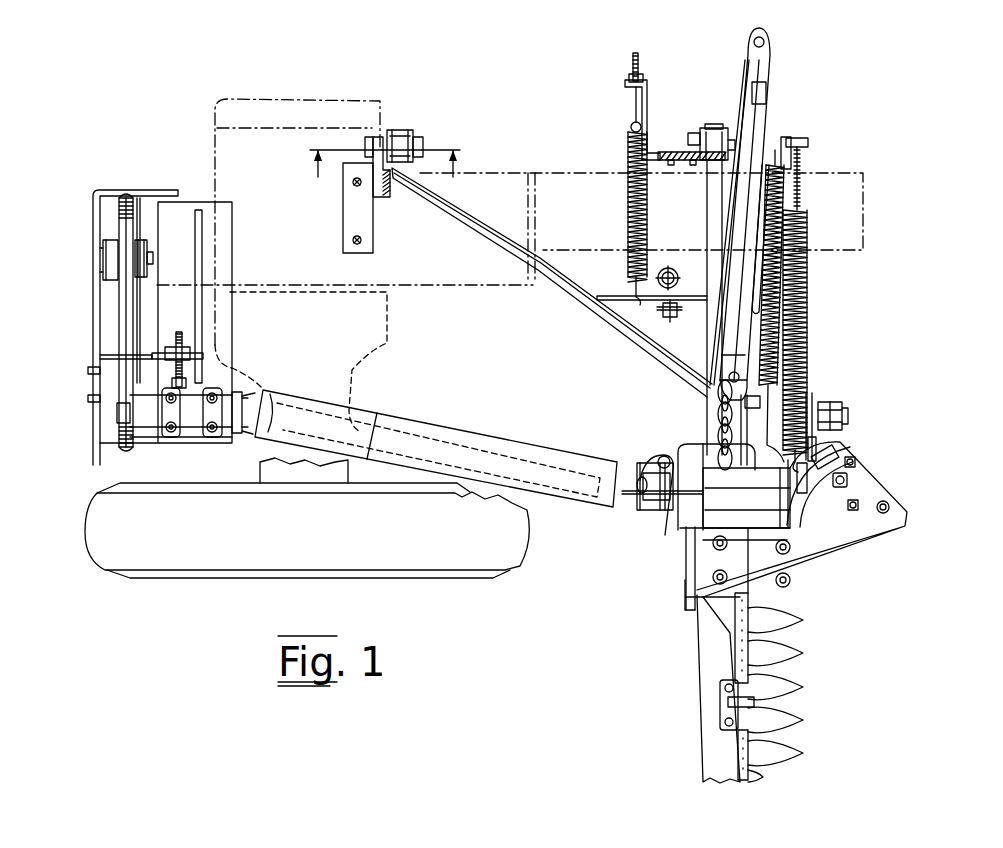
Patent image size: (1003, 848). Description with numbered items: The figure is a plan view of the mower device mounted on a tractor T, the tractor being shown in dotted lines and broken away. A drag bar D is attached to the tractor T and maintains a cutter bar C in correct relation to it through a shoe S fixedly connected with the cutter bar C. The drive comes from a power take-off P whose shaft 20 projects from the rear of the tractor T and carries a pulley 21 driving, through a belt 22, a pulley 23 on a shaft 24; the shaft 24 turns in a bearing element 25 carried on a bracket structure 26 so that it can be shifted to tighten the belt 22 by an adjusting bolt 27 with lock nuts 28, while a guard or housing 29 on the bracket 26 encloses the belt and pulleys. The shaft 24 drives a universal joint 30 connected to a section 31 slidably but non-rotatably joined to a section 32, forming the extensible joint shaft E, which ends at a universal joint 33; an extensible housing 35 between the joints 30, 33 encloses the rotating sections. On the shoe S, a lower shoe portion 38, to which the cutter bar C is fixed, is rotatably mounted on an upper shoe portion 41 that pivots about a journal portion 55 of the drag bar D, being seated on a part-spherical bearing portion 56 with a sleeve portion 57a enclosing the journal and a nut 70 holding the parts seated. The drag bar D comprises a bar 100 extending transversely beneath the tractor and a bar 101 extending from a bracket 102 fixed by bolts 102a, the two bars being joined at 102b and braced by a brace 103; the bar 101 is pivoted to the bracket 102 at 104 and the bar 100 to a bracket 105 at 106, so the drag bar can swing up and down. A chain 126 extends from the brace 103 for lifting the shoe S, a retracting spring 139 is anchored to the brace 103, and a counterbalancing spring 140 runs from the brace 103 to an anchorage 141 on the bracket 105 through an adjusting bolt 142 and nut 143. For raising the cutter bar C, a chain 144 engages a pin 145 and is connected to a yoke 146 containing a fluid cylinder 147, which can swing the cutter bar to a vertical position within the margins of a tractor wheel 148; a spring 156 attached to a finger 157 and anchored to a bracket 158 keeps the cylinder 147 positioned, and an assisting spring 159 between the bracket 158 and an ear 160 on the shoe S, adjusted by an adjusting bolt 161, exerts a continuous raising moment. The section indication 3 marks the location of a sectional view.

The power take-off P is at (136, 228).
The tractor T is at (478, 170).
The section line 3- 3 is at (385, 150).
The shaft 20 is at (150, 252).
The pulley 21 is at (117, 302).
The belt 22 is at (127, 332).
The pulley 23 is at (107, 382).
The shaft 24 is at (115, 410).
The bearing element 25 is at (192, 420).
The bracket structure 26 is at (215, 375).
The adjusting bolt 27 is at (183, 338).
The lock nuts 28 is at (153, 357).
The guard or housing 29 is at (93, 232).
The universal joint 30 is at (253, 397).
The section 31 is at (358, 430).
The section 32 is at (552, 463).
The universal joint 33 is at (627, 497).
The extensible housing 35 is at (413, 412).
The lower shoe portion 38 is at (823, 560).
The upper shoe portion 41 is at (700, 458).
The journal portion 55 is at (812, 393).
The part-spherical bearing portion 56 is at (758, 396).
The sleeve portion 57a is at (820, 402).
The nut 70 is at (832, 402).
The bar 100 is at (713, 200).
The bar 101 is at (577, 293).
The bracket 102 is at (377, 140).
The bolts 102a is at (357, 240).
The joint 102b is at (703, 403).
The brace 103 is at (610, 293).
The pivot 104 is at (399, 130).
The bracket 105 is at (665, 153).
The pivot 106 is at (720, 118).
The chain 126 is at (683, 307).
The retracting spring 139 is at (670, 273).
The counterbalancing spring 140 is at (628, 155).
The anchorage 141 is at (647, 97).
The adjusting bolt 142 is at (628, 100).
The nut 143 is at (630, 74).
The chain 144 is at (717, 423).
The pin 145 is at (766, 400).
The yoke 146 is at (743, 82).
The fluid cylinder 147 is at (760, 117).
The tractor wheel 148 is at (188, 555).
The spring 156 is at (772, 147).
The finger 157 is at (745, 312).
The bracket 158 is at (808, 146).
The assisting spring 159 is at (807, 290).
The ear 160 is at (820, 467).
The adjusting bolt 161 is at (803, 167).
The cutter bar C is at (700, 660).
The drag bar D is at (552, 287).
The extensible joint shaft E is at (436, 422).
The shoe S is at (831, 508).